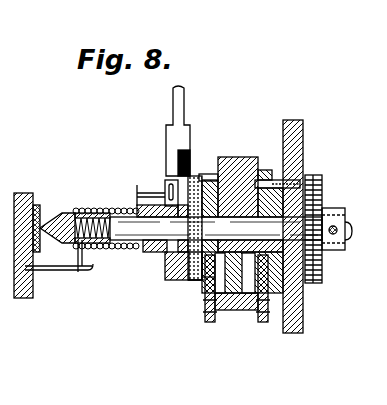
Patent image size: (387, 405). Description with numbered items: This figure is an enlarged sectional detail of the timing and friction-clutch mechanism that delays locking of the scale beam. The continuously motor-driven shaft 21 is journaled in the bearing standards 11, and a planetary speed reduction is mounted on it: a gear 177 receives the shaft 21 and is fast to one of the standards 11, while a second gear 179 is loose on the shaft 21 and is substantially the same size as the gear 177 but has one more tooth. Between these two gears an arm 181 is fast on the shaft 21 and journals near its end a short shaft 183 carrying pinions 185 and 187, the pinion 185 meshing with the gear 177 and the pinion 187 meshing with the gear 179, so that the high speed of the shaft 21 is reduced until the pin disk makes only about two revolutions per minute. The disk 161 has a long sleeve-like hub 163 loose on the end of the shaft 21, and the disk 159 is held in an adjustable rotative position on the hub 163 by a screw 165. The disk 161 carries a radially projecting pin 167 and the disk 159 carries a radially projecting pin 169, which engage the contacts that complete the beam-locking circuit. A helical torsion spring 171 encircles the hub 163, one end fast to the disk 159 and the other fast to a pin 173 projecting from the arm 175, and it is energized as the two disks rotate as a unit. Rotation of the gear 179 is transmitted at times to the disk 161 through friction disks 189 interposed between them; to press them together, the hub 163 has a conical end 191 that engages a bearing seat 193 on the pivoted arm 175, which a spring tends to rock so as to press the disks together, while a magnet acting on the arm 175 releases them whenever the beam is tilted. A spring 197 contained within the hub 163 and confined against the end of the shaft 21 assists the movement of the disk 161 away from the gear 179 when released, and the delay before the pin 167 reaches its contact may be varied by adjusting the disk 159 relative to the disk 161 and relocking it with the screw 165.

The standards 11 is at (303, 126).
The shaft 21 is at (256, 172).
The disk member 159 is at (183, 262).
The disk member 161 is at (195, 268).
The hub 163 is at (96, 248).
The screw 165 is at (160, 255).
The pin 167 is at (194, 175).
The pin 169 is at (170, 188).
The helical torsion spring 171 is at (140, 216).
The pin 173 is at (48, 272).
The arm 175 is at (28, 300).
The gear 177 is at (297, 170).
The second gear 179 is at (208, 176).
The arm 181 is at (222, 207).
The short shaft 183 is at (240, 310).
The pinion 185 is at (265, 322).
The pinion 187 is at (210, 322).
The friction disks 189 is at (200, 280).
The conical end 191 is at (64, 213).
The bearing seat 193 is at (39, 205).
The spring 197 is at (98, 216).